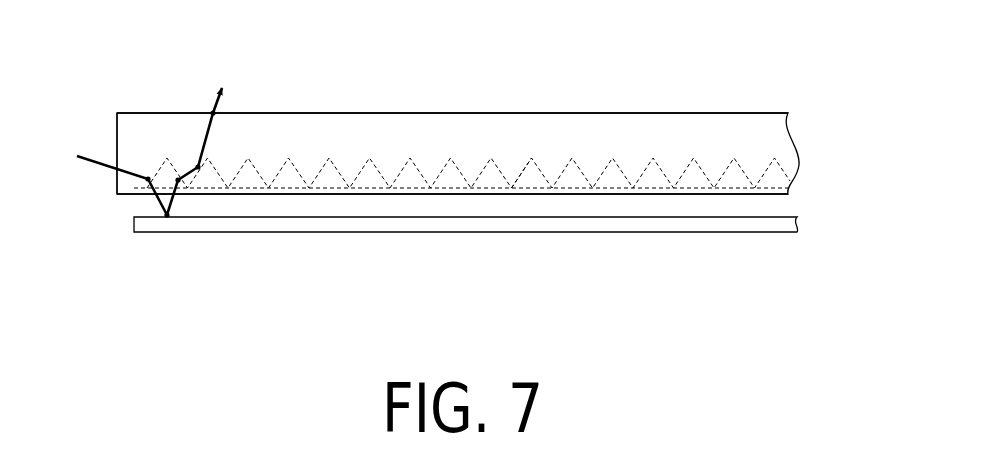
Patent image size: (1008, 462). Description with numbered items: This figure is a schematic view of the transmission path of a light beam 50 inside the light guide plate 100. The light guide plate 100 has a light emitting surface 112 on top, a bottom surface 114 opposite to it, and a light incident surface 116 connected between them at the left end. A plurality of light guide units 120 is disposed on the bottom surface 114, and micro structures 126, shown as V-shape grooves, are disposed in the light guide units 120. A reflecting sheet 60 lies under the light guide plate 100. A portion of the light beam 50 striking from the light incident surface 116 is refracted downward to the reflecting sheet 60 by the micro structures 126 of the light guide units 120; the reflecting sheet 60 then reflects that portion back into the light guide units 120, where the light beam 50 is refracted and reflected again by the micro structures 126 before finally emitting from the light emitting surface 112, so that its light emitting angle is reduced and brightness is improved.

The light guide plate 100 is at (770, 127).
The light emitting surface 112 is at (142, 111).
The bottom surface 114 is at (147, 197).
The light incident surface 116 is at (115, 178).
The light guide units 120 is at (786, 168).
The micro structures 126 is at (518, 176).
The reflecting sheet 60 is at (795, 223).
The light beam 50 is at (90, 155).